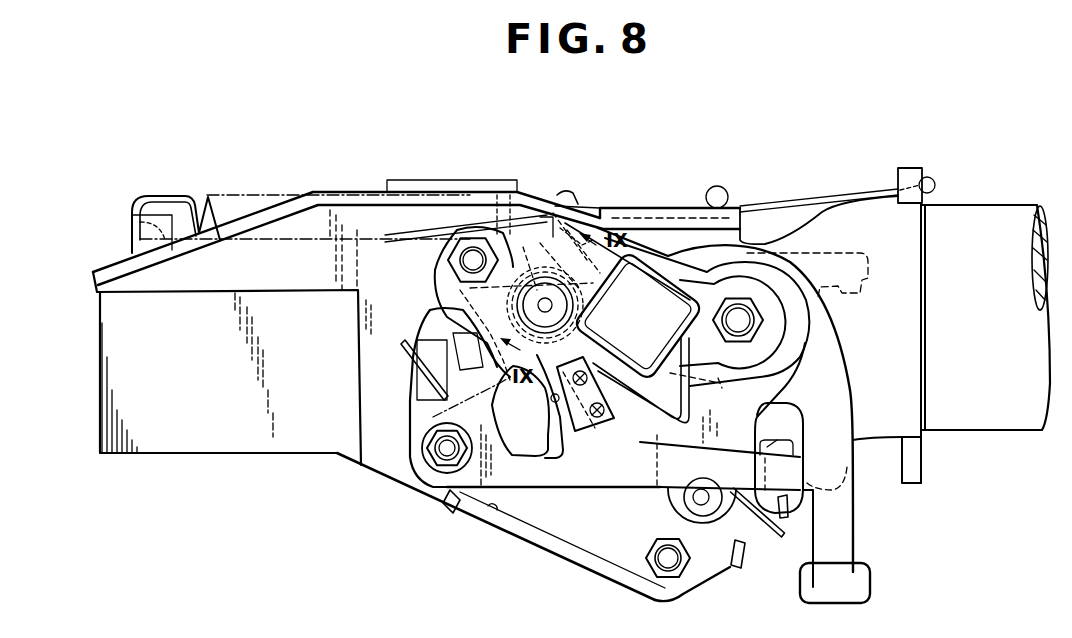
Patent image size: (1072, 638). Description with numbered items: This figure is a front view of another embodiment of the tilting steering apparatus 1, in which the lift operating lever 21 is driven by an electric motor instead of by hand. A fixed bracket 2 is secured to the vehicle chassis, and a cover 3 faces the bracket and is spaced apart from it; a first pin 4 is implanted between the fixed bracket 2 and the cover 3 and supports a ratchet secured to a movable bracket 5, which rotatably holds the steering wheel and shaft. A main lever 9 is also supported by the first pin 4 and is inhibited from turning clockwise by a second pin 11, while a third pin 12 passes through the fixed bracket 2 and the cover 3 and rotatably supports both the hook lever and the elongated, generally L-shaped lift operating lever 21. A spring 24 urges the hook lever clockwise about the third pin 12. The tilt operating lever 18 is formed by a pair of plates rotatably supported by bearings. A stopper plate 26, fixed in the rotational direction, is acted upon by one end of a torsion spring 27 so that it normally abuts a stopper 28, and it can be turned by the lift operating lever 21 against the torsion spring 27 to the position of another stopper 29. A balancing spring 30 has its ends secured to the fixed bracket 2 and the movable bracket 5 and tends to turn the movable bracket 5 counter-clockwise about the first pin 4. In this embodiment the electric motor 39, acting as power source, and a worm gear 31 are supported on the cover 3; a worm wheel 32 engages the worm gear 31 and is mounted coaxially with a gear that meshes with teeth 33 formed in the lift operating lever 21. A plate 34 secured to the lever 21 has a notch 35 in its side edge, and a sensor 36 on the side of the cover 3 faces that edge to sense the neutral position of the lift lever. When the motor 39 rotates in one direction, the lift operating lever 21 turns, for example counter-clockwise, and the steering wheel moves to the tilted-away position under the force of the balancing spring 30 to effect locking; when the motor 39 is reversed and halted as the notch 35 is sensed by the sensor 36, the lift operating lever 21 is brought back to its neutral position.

The tensioner assembly 1 is at (569, 140).
The fixed bracket 2 is at (672, 228).
The cover 3 is at (565, 525).
The first pin 4 is at (740, 327).
The movable bracket 5 is at (905, 168).
The main lever 9 is at (873, 300).
The second pin 11 is at (458, 259).
The third pin 12 is at (444, 452).
The tilt operating lever 18 is at (862, 543).
The lift operating lever 21 is at (600, 490).
The spring 24 is at (402, 346).
The stopper plate 26 is at (788, 513).
The torsion spring 27 is at (778, 538).
The stopper 28 is at (790, 470).
The stopper 29 is at (737, 570).
The spring 30 is at (250, 193).
The worm gear 31 is at (575, 228).
The worm wheel 32 is at (470, 288).
The teeth 33 is at (505, 297).
The plate 34 is at (550, 538).
The notch 35 is at (533, 458).
The sensor 36 is at (606, 428).
The electric motor 39 is at (646, 248).